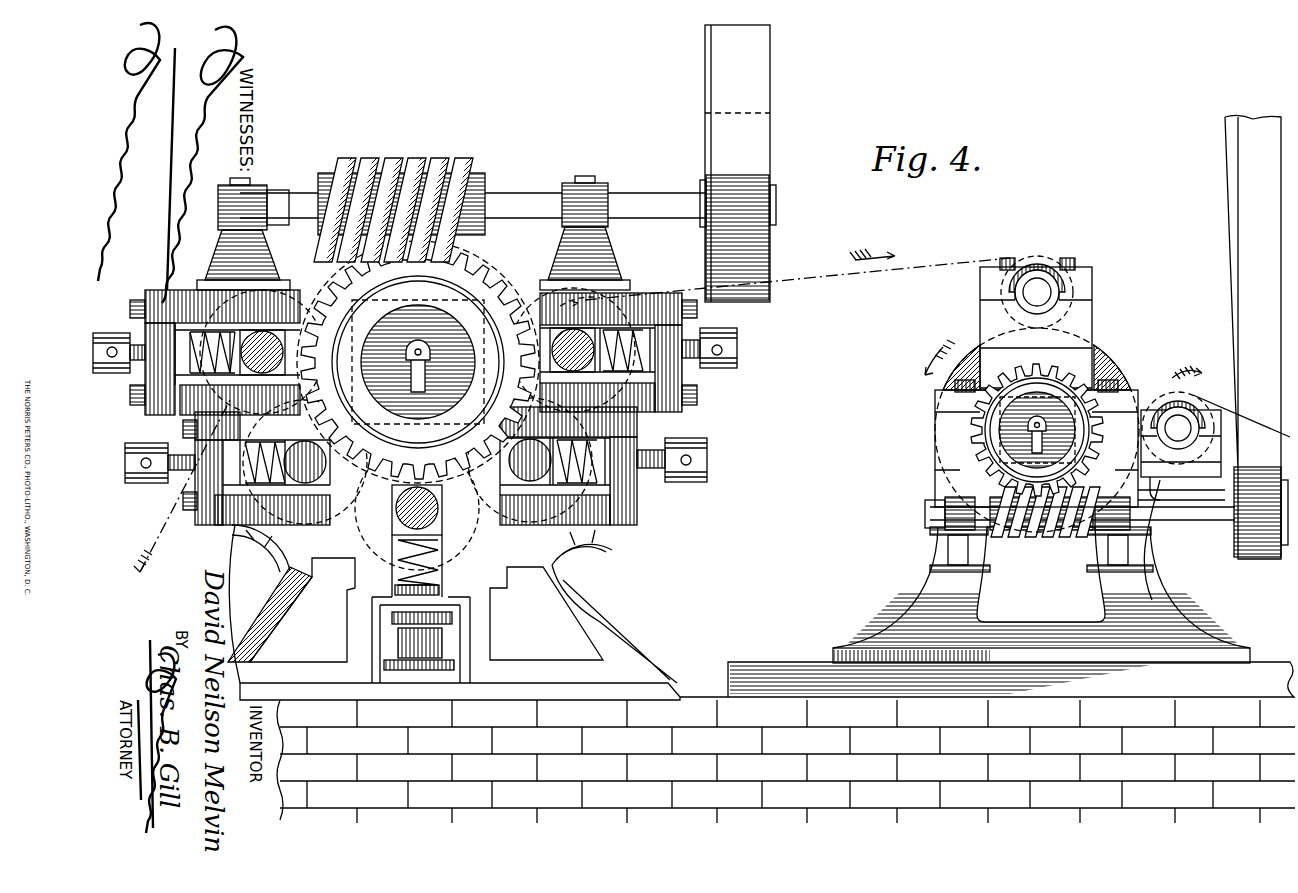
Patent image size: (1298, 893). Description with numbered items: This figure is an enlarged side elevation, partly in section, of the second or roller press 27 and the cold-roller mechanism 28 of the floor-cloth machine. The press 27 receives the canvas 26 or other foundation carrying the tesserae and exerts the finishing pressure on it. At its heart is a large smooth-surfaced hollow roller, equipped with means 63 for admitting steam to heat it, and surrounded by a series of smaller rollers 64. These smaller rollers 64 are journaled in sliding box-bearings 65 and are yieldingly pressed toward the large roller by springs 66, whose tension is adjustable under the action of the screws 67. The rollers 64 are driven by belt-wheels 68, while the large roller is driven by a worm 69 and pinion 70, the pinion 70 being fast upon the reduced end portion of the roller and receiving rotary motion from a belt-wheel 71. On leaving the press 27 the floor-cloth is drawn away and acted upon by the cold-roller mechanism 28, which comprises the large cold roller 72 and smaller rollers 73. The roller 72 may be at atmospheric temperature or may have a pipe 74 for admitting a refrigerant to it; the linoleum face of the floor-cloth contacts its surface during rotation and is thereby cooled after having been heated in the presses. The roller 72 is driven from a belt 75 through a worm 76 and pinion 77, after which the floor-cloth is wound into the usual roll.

The canvas 26 is at (884, 270).
The second or roller press 27 is at (575, 183).
The cold-roller mechanism 28 is at (1080, 382).
The means for the admission of steam 63 is at (440, 385).
The smaller rollers 64 is at (500, 500).
The sliding box-bearings 65 is at (560, 480).
The springs 66 is at (678, 276).
The screws 67 is at (707, 460).
The belt-wheels 68 is at (454, 612).
The worm 69 is at (420, 158).
The pinion 70 is at (498, 268).
The belt-wheel 71 is at (770, 92).
The large cold roller 72 is at (1113, 372).
The smaller rollers 73 is at (1165, 385).
The pipe 74 is at (1090, 440).
The belt 75 is at (1256, 337).
The worm 76 is at (1040, 537).
The pinion 77 is at (1000, 432).